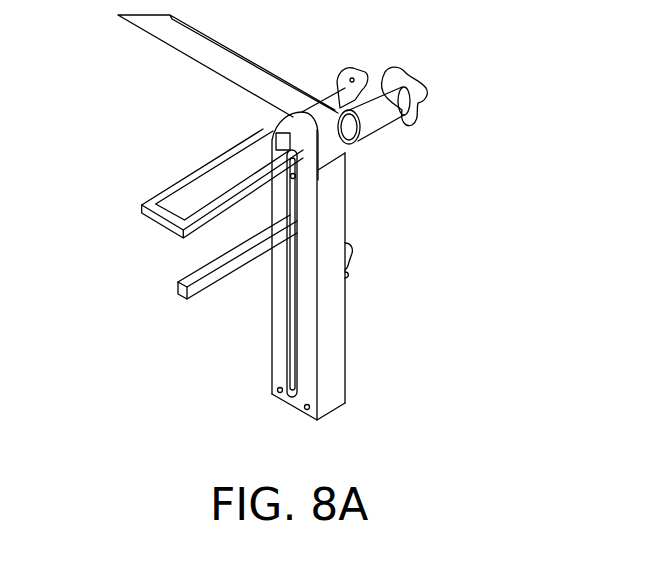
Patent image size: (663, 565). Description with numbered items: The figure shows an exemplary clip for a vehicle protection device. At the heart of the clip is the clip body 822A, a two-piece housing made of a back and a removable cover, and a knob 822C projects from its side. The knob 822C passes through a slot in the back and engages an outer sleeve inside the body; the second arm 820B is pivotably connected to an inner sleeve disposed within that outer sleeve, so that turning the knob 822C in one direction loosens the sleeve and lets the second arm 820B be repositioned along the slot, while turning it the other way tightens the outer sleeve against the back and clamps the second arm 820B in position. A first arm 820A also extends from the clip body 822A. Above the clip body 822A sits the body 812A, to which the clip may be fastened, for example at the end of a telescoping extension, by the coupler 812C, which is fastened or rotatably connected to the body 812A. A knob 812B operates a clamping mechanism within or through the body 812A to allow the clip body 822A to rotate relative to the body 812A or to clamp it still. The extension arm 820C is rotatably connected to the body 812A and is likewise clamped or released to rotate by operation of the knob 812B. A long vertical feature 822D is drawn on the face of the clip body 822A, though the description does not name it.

The first arm 820A is at (181, 186).
The second arm 820B is at (178, 284).
The extension arm 820C is at (228, 65).
The clip body 822A is at (356, 341).
The knob 822C is at (345, 277).
The slot 822D is at (293, 357).
The body 812A is at (375, 115).
The knob 812B is at (422, 91).
The coupler 812C is at (368, 78).